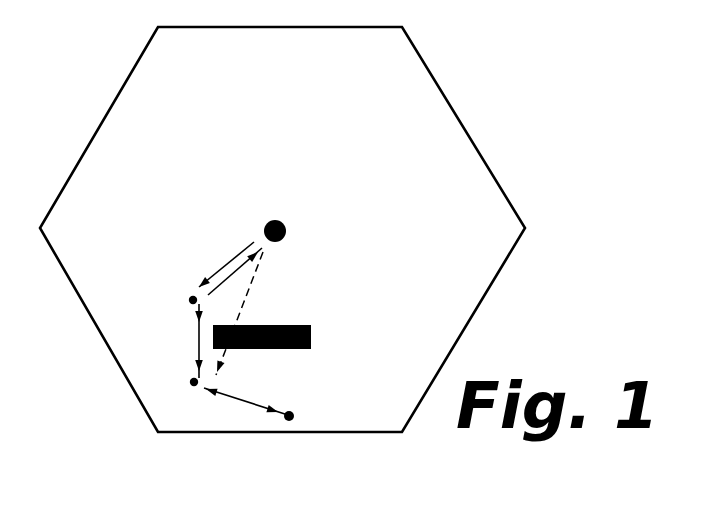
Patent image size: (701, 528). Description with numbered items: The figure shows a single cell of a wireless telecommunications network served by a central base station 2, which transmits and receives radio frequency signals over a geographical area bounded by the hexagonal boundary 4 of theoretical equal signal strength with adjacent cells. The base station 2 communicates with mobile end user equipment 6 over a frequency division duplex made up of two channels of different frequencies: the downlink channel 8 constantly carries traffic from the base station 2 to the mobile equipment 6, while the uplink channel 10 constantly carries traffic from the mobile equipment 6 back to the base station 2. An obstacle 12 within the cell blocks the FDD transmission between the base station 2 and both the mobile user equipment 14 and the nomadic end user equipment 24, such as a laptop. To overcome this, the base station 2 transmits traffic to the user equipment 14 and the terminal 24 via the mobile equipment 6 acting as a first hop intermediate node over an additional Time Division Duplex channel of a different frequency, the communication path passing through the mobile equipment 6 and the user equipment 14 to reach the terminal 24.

The base station 2 is at (270, 219).
The hexagonal boundary 4 is at (470, 138).
The mobile end user equipment 6 is at (191, 296).
The downlink channel 8 is at (232, 262).
The uplink channel 10 is at (240, 268).
The obstacle 12 is at (312, 337).
The mobile user equipment 14 is at (191, 380).
The nomadic end user equipment 24 is at (290, 422).